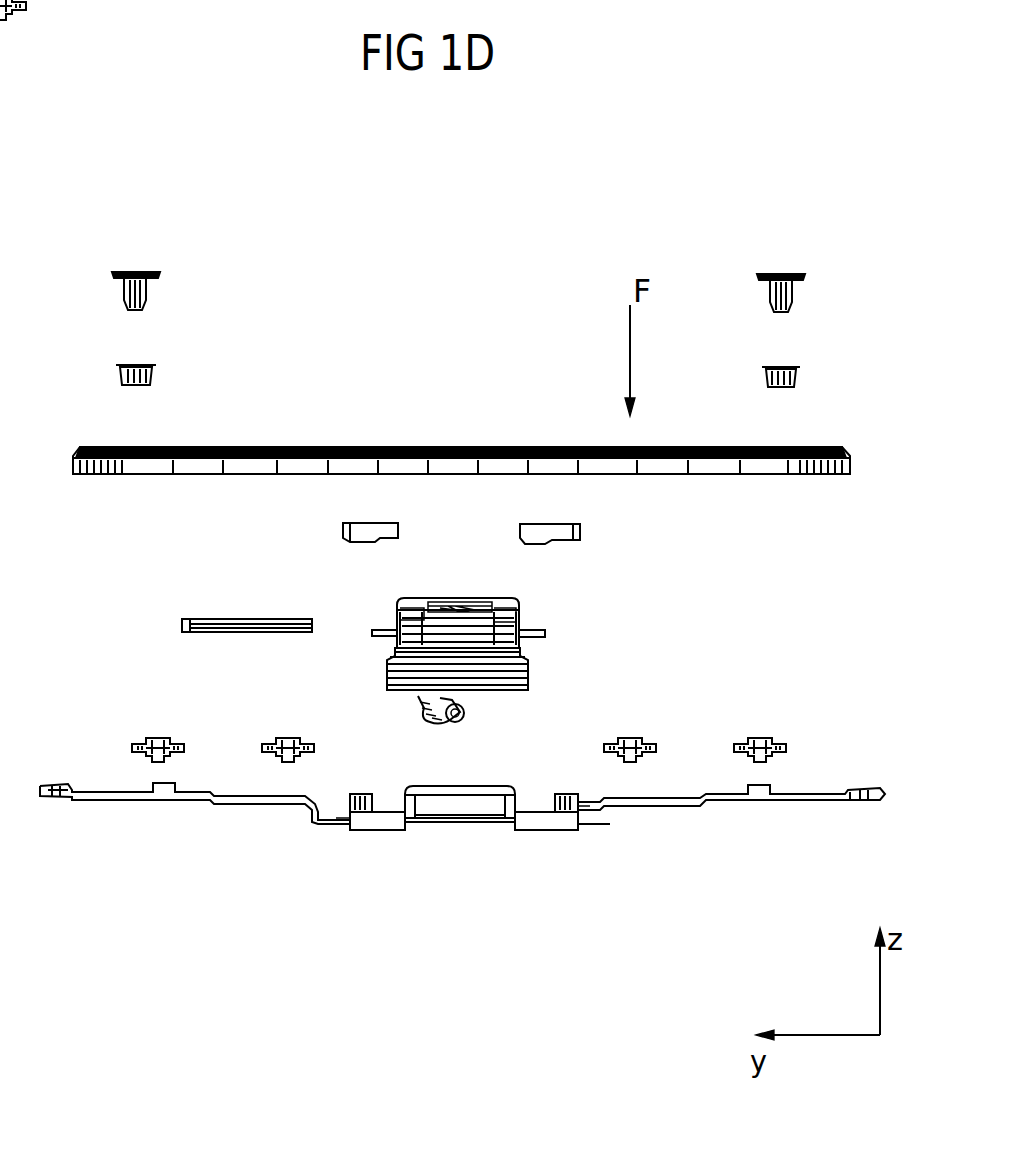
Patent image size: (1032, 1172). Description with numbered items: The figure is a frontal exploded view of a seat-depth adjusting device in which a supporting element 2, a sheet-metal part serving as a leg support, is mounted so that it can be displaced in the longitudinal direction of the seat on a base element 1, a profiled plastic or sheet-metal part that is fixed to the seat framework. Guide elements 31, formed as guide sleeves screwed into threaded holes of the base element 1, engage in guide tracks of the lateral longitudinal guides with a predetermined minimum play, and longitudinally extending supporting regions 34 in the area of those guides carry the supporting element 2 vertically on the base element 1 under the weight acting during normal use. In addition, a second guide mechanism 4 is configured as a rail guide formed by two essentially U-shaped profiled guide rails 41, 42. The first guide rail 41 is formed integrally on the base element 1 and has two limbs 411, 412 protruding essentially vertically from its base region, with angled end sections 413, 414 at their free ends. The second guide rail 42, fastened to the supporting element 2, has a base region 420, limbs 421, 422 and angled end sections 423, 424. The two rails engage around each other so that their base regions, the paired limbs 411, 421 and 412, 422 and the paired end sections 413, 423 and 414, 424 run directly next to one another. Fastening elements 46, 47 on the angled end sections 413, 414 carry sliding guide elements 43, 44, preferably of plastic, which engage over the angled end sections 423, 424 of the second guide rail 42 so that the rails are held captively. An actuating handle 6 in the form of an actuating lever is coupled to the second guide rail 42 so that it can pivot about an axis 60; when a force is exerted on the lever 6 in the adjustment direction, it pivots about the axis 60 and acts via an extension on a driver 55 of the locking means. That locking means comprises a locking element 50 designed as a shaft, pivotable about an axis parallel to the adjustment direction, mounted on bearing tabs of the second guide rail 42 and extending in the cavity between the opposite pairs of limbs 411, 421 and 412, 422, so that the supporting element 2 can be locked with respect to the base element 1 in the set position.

The base element 1 is at (462, 884).
The supporting element 2 is at (397, 448).
The second guide mechanism 4 is at (440, 765).
The actuating handle 6 is at (533, 683).
The guide element 31 is at (146, 362).
The supporting region 34 is at (155, 783).
The first guide rail 41 is at (464, 890).
The second guide rail 42 is at (476, 602).
The sliding guide element 43 is at (340, 529).
The sliding guide element 44 is at (554, 527).
The fastening element 46 is at (338, 822).
The fastening element 47 is at (616, 810).
The locking element 50 is at (465, 713).
The driver 55 is at (418, 712).
The pivot axis 60 is at (226, 618).
The limb 411 is at (423, 822).
The limb 412 is at (503, 820).
The angled end section 413 is at (375, 830).
The angled end section 414 is at (560, 830).
The base region 420 is at (427, 602).
The limb 421 is at (398, 612).
The limb 422 is at (524, 616).
The angled end section 423 is at (378, 634).
The angled end section 424 is at (545, 634).